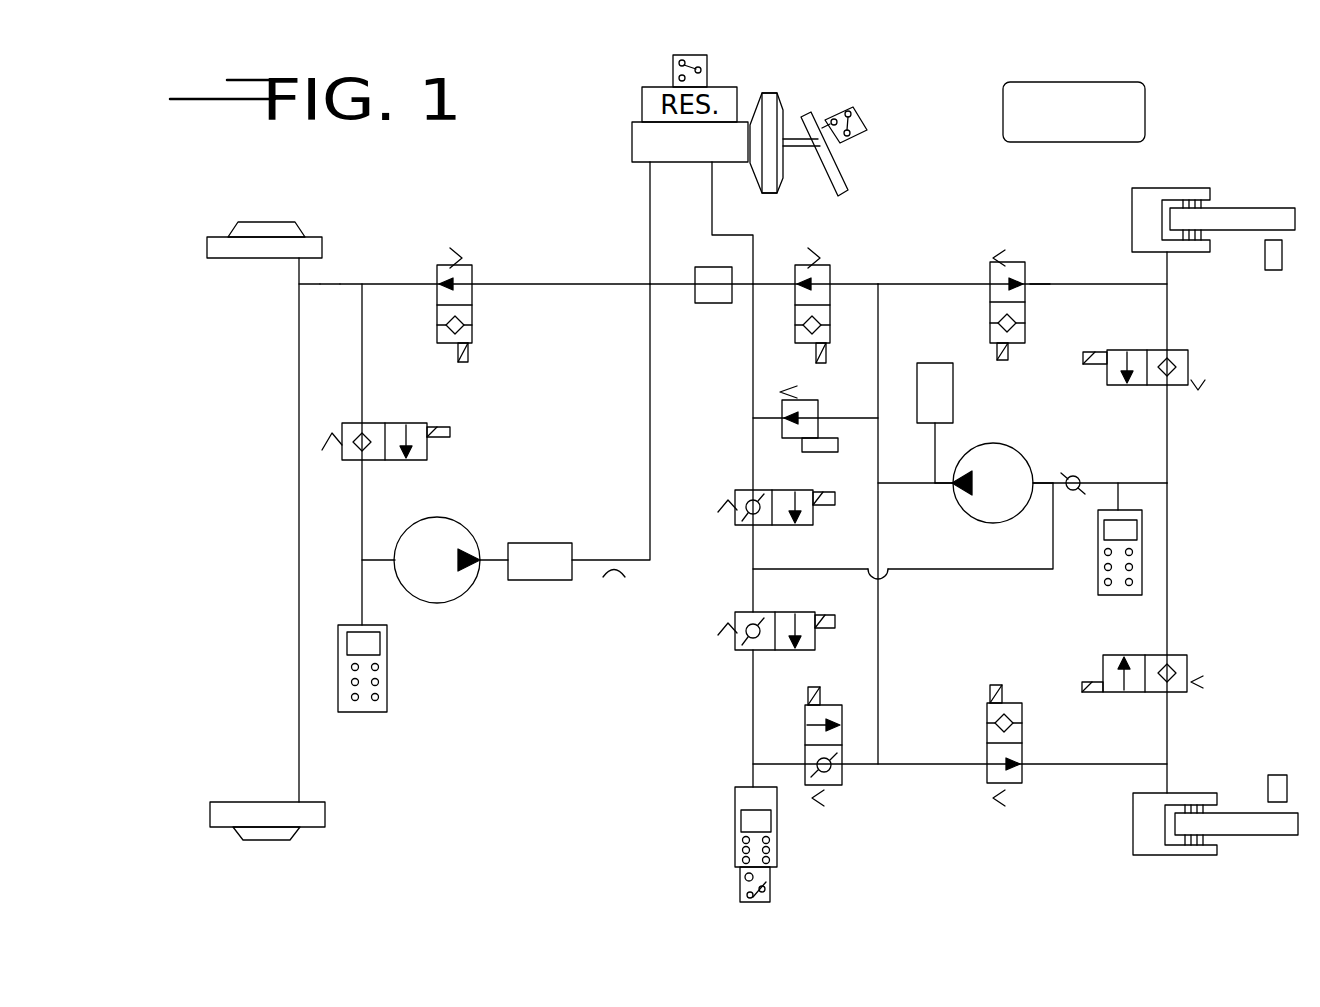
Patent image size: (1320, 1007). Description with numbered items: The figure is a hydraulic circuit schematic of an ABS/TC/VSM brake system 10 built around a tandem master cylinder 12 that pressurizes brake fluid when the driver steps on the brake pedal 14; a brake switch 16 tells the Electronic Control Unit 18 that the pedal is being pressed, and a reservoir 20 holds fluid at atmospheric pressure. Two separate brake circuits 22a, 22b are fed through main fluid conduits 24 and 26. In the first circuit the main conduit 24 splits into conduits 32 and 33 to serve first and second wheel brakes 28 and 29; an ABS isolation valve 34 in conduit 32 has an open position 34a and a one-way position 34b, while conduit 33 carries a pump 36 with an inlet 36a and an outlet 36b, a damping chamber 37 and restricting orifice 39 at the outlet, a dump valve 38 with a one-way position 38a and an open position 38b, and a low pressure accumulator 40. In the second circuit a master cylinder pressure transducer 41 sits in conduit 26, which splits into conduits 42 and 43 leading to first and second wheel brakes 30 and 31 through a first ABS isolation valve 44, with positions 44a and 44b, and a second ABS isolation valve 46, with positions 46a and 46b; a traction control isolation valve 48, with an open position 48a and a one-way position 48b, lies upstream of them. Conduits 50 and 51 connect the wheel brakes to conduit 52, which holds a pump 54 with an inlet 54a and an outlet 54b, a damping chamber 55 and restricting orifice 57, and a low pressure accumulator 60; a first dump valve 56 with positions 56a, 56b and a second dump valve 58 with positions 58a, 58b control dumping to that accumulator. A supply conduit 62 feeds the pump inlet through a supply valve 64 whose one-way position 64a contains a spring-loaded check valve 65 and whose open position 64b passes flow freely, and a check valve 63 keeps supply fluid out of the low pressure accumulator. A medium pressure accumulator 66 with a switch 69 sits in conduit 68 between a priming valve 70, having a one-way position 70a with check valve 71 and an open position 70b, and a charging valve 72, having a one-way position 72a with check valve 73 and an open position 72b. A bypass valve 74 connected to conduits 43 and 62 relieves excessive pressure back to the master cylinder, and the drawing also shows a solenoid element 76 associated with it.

The brake system 10 is at (535, 200).
The tandem master cylinder 12 is at (632, 140).
The brake pedal 14 is at (838, 167).
The brake switch 16 is at (867, 117).
The Electronic Control Unit 18 is at (1147, 105).
The reservoir 20 is at (642, 105).
The brake circuit 22a is at (522, 240).
The brake circuit 22b is at (968, 237).
The main fluid conduit 24 is at (648, 210).
The main fluid conduit 26 is at (713, 205).
The first wheel brake 28 is at (232, 258).
The second wheel brake 29 is at (228, 802).
The first wheel brake 30 is at (1185, 190).
The second wheel brake 31 is at (1195, 792).
The conduit 32 is at (573, 288).
The conduit 33 is at (650, 390).
The ABS isolation valve 34 is at (475, 335).
The first open position 34a is at (437, 284).
The second position 34b is at (435, 330).
The pump 36 is at (455, 612).
The pump inlet 36a is at (394, 558).
The pump outlet 36b is at (478, 552).
The damping chamber 37 is at (520, 543).
The dump valve 38 is at (402, 424).
The first one-way position 38a is at (348, 462).
The second open position 38b is at (415, 462).
The restricting orifice 39 is at (608, 550).
The low pressure accumulator 40 is at (395, 683).
The master cylinder pressure transducer 41 is at (695, 285).
The conduit 42 is at (918, 288).
The conduit 43 is at (878, 312).
The first ABS isolation valve 44 is at (1028, 320).
The first open position 44a is at (1027, 284).
The second position 44b is at (1030, 332).
The second ABS isolation valve 46 is at (1025, 730).
The first open position 46a is at (1027, 770).
The second position 46b is at (987, 722).
The traction control isolation valve 48 is at (793, 305).
The first open position 48a is at (793, 280).
The second position 48b is at (830, 322).
The conduit 50 is at (1172, 440).
The conduit 51 is at (1172, 600).
The conduit 52 is at (1095, 480).
The pump 54 is at (965, 455).
The pump inlet 54a is at (1035, 476).
The pump outlet 54b is at (950, 490).
The damping chamber 55 is at (955, 390).
The first dump valve 56 is at (1195, 350).
The first one-way position 56a is at (1195, 380).
The second open position 56b is at (1130, 386).
The restricting orifice 57 is at (900, 480).
The second dump valve 58 is at (1192, 662).
The first one-way position 58a is at (1190, 698).
The second open position 58b is at (1120, 696).
The low pressure accumulator 60 is at (1095, 575).
The supply conduit 62 is at (752, 378).
The one-way check valve 63 is at (1060, 500).
The supply valve 64 is at (735, 520).
The first one-way position 64a is at (745, 490).
The second open position 64b is at (808, 478).
The spring-loaded check valve 65 is at (740, 540).
The medium pressure accumulator 66 is at (735, 840).
The conduit 68 is at (752, 722).
The switch 69 is at (740, 885).
The priming valve 70 is at (735, 612).
The first one-way position 70a is at (752, 652).
The second open position 70b is at (812, 650).
The spring-loaded check valve 71 is at (766, 650).
The charging valve 72 is at (835, 790).
The first one-way position 72a is at (842, 760).
The second open position 72b is at (832, 725).
The spring-loaded check valve 73 is at (832, 780).
The bypass valve 74 is at (815, 393).
The solenoid 76 is at (825, 453).